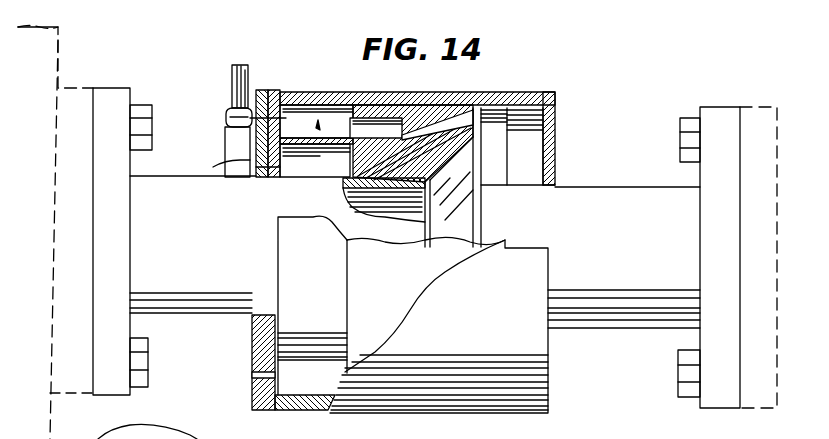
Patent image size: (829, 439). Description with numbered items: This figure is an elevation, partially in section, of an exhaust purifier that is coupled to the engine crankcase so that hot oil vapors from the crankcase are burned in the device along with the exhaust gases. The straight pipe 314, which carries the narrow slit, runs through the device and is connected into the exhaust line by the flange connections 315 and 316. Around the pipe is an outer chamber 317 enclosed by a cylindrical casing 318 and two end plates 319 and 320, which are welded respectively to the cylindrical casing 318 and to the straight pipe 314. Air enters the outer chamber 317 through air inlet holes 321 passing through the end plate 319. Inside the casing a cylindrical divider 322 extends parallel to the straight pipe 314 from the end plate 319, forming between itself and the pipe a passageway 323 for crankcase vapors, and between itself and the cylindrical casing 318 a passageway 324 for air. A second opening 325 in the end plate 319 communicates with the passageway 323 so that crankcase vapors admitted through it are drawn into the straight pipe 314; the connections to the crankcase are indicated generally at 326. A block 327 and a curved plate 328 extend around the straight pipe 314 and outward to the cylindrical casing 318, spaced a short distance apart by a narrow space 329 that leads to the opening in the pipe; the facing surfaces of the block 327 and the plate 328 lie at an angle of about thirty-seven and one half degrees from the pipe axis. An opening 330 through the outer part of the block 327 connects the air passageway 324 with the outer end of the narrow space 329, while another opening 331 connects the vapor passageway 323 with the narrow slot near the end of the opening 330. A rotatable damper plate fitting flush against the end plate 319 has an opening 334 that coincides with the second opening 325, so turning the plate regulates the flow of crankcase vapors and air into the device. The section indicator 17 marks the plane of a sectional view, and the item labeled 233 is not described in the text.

The section line 17- 17 is at (216, 438).
The adjusting screw 233 is at (242, 110).
The straight pipe 314 is at (230, 244).
The flange connection 315 is at (138, 82).
The flange connection 316 is at (728, 107).
The outer chamber 317 is at (318, 128).
The cylindrical casing 318 is at (505, 100).
The end plate 319 is at (300, 108).
The end plate 320 is at (555, 145).
The air inlet holes 321 is at (292, 100).
The cylindrical divider 322 is at (363, 105).
The passageway 323 is at (325, 140).
The passageway 324 is at (300, 378).
The second opening 325 is at (288, 162).
The connections to the crankcase 326 is at (218, 135).
The block 327 is at (452, 105).
The curved plate 328 is at (526, 146).
The narrow space 329 is at (444, 172).
The opening 330 is at (422, 120).
The opening 331 is at (435, 140).
The opening 334 is at (218, 152).